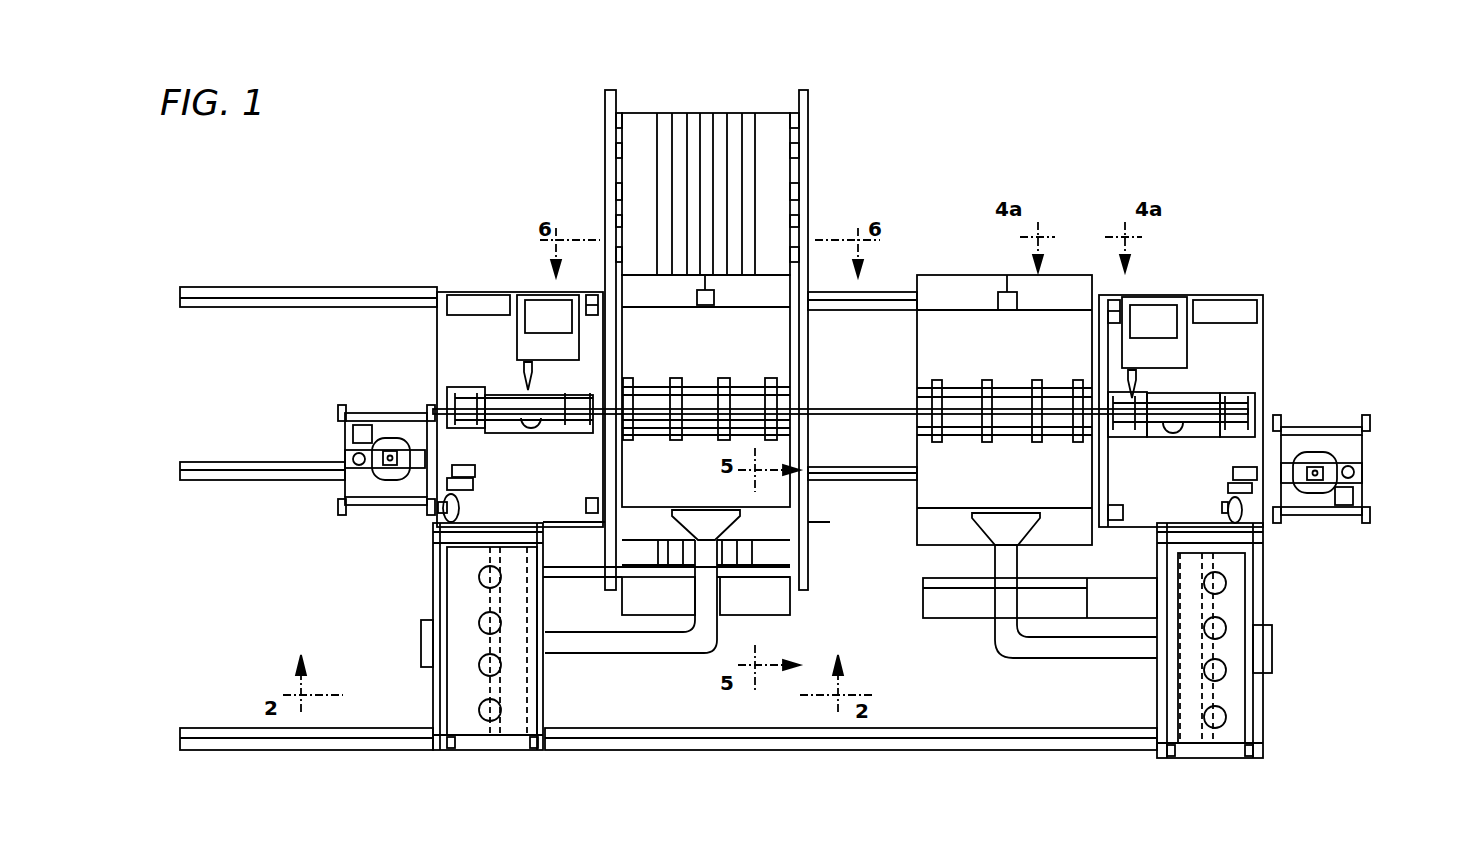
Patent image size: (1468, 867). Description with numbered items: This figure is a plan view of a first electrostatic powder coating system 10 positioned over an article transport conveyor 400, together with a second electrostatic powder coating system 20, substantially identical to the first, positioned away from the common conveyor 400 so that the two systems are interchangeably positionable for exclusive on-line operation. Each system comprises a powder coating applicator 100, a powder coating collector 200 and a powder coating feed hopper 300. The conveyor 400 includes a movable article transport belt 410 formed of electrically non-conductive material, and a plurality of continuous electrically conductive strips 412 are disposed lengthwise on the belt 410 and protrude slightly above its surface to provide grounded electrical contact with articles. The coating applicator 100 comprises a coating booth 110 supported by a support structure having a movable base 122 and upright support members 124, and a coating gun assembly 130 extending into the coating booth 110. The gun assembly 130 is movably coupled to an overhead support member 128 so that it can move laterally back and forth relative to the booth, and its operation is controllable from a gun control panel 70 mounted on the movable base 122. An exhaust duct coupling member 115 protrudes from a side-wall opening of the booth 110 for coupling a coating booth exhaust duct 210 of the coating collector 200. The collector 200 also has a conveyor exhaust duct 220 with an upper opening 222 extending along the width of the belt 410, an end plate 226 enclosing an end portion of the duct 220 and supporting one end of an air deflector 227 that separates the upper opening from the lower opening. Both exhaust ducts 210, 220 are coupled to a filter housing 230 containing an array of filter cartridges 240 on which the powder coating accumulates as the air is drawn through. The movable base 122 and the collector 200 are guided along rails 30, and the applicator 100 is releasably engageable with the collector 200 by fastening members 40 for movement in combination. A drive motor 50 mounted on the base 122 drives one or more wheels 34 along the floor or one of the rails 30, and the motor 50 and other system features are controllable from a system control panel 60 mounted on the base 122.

The first electrostatic powder coating system 10 is at (310, 213).
The second electrostatic powder coating system 20 is at (1266, 228).
The rails 30 is at (234, 287).
The wheels 34 is at (458, 478).
The fastening members 40 is at (438, 508).
The drive motor 50 is at (450, 520).
The system control panel 60 is at (477, 303).
The gun control panel 70 is at (542, 305).
The powder coating applicator 100 is at (428, 327).
The coating booth 110 is at (641, 272).
The exhaust duct coupling member 115 is at (740, 518).
The movable base 122 is at (437, 343).
The upright support members 124 is at (1110, 298).
The overhead support member 128 is at (815, 417).
The coating gun assembly 130 is at (485, 370).
The powder coating collector 200 is at (410, 645).
The coating booth exhaust duct 210 is at (705, 655).
The conveyor exhaust duct 220 is at (740, 632).
The upper opening 222 is at (760, 587).
The end plate 226 is at (768, 612).
The air deflector 227 is at (768, 555).
The filter housing 230 is at (418, 707).
The filter cartridges 240 is at (482, 580).
The powder coating feed hopper 300 is at (362, 405).
The article transport conveyor 400 is at (705, 100).
The article transport belt 410 is at (642, 136).
The electrically conductive strips 412 is at (657, 165).